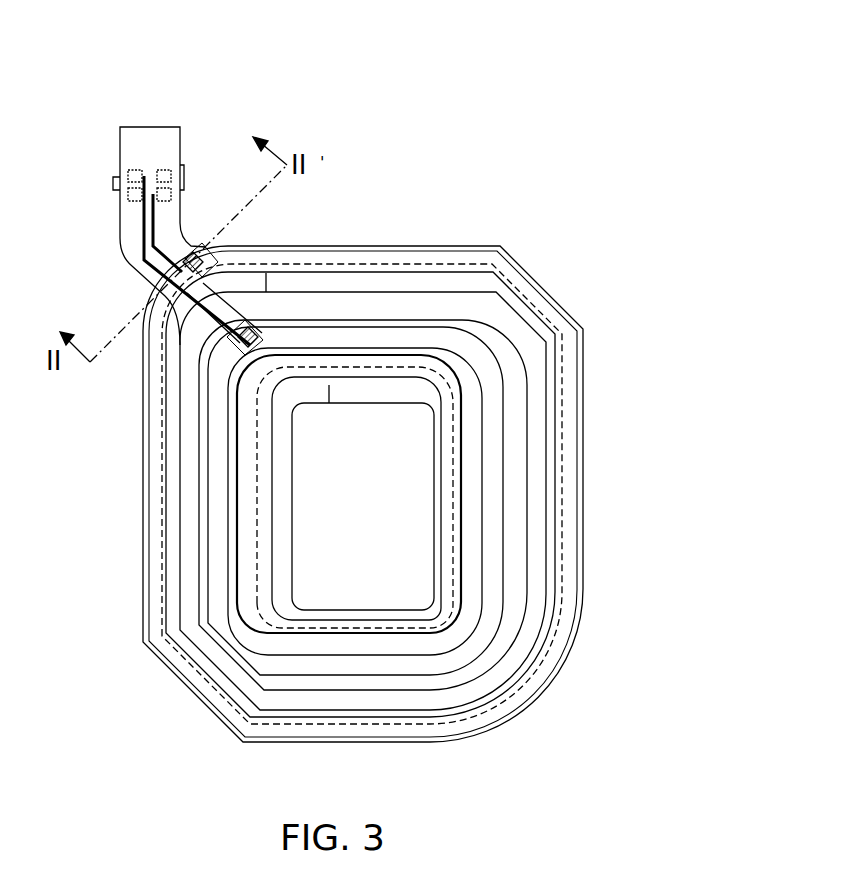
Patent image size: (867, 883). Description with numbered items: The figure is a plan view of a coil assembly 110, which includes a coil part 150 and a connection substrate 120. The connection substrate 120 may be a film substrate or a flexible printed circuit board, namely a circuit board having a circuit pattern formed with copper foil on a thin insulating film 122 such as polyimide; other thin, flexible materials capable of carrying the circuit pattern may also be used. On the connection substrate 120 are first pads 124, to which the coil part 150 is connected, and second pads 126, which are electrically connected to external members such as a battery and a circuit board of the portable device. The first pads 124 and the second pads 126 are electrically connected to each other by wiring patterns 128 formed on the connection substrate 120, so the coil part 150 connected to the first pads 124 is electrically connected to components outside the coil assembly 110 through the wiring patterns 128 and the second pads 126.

The coil assembly 110 is at (537, 121).
The connection substrate 120 is at (167, 119).
The insulating film 122 is at (133, 216).
The first pads 124 is at (252, 332).
The second pads 126 is at (170, 196).
The wiring patterns 128 is at (140, 232).
The coil part 150 is at (400, 242).